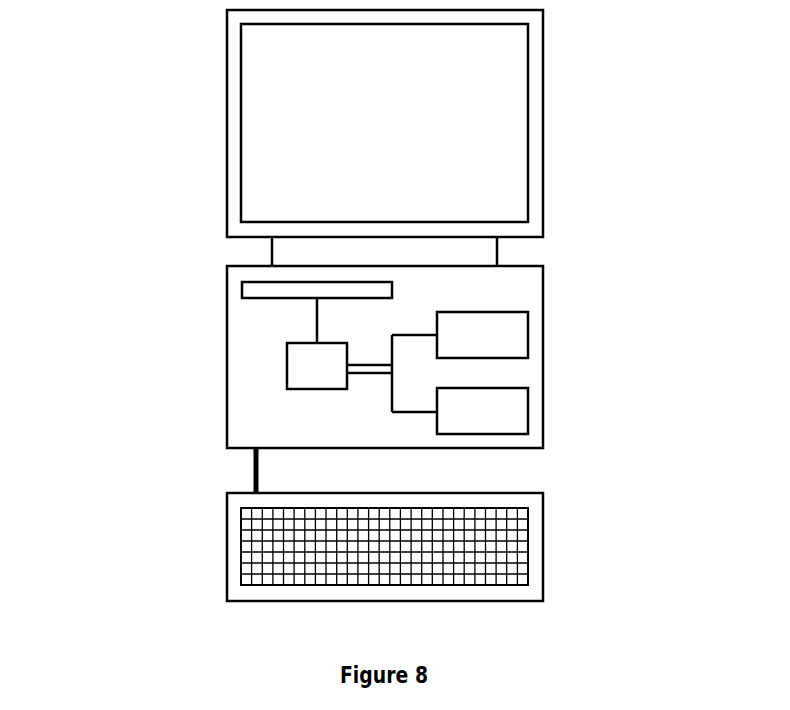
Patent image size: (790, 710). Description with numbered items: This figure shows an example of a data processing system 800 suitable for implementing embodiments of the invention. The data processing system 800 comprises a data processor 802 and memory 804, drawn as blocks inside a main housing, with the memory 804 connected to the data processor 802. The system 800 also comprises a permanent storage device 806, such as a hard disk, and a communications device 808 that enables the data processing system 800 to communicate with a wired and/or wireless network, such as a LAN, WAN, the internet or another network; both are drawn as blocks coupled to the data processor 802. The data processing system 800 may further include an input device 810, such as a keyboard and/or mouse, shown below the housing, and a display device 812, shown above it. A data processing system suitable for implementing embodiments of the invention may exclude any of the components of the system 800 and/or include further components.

The data processing system 800 is at (145, 160).
The data processor 802 is at (300, 362).
The memory 804 is at (242, 282).
The permanent storage device 806 is at (512, 329).
The communications device 808 is at (512, 412).
The input device 810 is at (543, 531).
The display device 812 is at (543, 125).